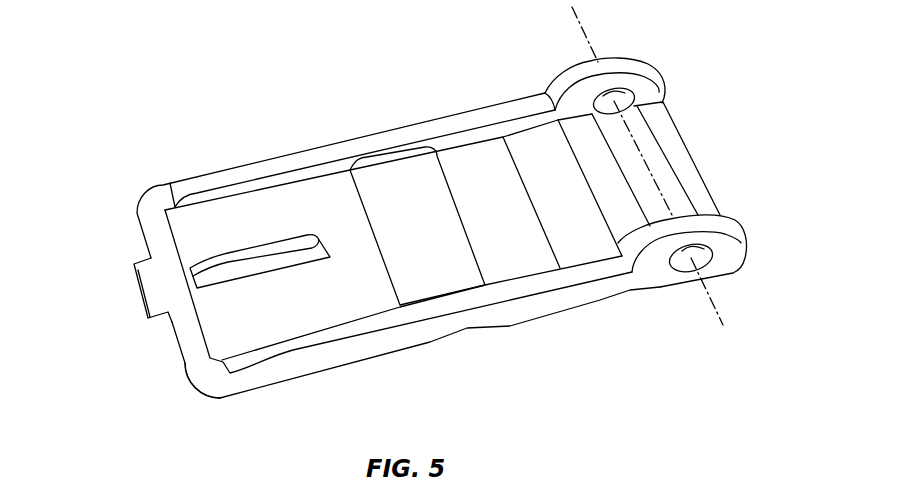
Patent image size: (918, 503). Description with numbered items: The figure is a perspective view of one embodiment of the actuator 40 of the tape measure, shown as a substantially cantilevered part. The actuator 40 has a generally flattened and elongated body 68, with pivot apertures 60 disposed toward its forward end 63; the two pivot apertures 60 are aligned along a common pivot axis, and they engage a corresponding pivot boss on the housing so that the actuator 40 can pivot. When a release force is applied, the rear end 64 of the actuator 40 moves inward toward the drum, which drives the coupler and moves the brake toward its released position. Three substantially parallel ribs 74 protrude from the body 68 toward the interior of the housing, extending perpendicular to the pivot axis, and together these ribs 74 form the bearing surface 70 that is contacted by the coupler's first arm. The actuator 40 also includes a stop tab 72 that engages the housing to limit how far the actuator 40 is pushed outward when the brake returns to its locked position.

The actuator 40 is at (250, 64).
The pivot apertures 60 is at (645, 76).
The forward end 63 is at (752, 282).
The rear end 64 is at (203, 413).
The body 68 is at (390, 180).
The bearing surface 70 is at (135, 173).
The stop tab 72 is at (146, 286).
The ribs 74 is at (253, 250).